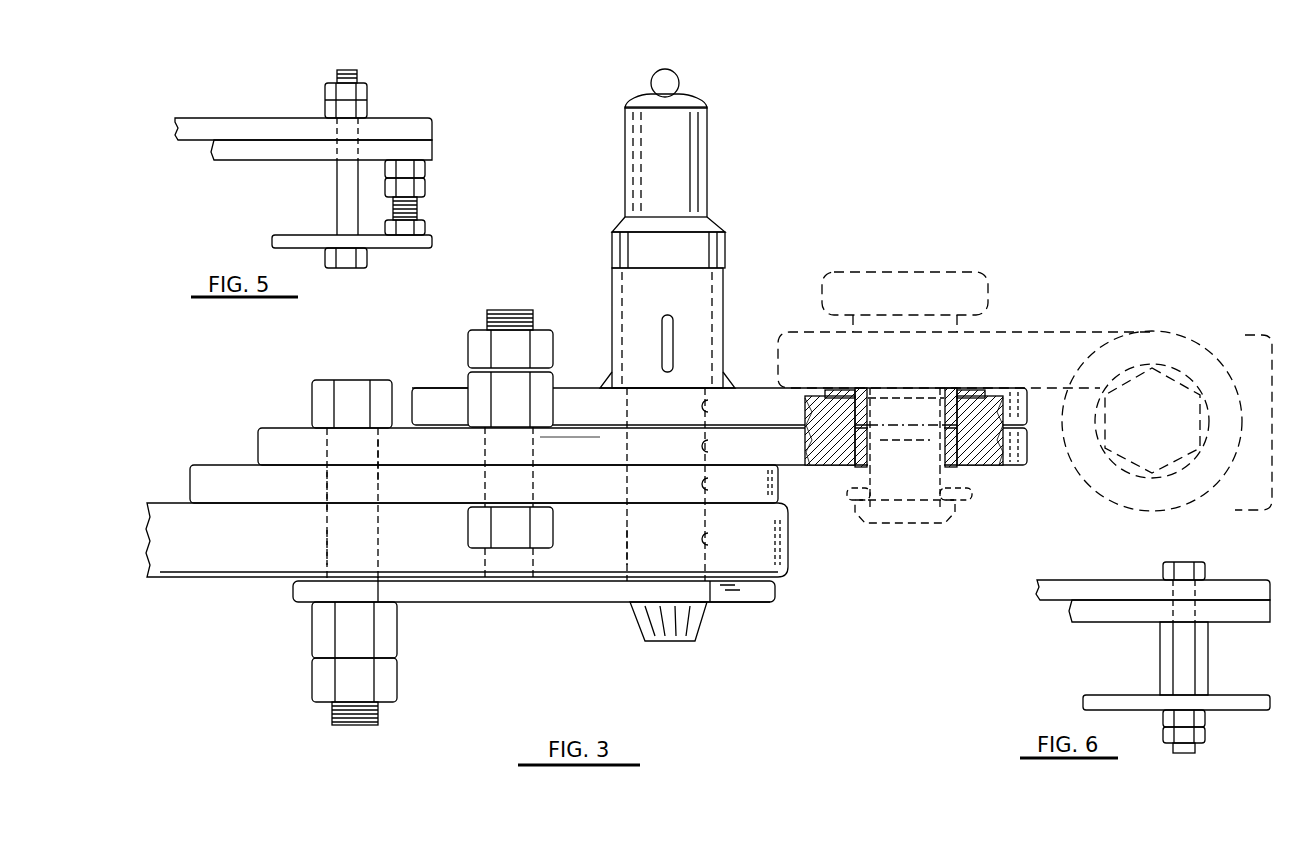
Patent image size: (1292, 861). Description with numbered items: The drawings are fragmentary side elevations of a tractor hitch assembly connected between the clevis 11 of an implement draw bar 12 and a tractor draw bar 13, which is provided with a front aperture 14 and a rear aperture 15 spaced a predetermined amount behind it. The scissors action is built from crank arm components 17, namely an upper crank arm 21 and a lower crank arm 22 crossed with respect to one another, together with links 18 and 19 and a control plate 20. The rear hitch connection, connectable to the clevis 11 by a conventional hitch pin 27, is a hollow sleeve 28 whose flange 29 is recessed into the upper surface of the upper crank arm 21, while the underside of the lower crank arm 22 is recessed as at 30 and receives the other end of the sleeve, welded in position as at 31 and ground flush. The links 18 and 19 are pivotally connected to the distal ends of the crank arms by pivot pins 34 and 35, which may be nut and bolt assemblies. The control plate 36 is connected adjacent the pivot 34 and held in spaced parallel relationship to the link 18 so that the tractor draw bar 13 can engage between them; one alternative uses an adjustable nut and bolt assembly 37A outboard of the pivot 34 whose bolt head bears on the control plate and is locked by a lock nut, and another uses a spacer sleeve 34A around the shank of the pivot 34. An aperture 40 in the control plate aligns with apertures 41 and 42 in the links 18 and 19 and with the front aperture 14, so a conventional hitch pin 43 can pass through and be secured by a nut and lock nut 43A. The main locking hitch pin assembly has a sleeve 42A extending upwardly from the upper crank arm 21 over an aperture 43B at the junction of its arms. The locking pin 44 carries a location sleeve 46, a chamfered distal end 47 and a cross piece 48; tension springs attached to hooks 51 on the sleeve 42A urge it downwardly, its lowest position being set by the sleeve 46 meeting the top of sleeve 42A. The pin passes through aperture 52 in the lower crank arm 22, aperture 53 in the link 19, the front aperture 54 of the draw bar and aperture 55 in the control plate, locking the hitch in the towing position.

In FIG. 3, the clevis 11 is at (1064, 344).
In FIG. 3, the implement draw bar 12 is at (1256, 340).
In FIG. 3, the tractor draw bar 13 is at (206, 563).
In FIG. 3, the front aperture 14 is at (326, 548).
In FIG. 3, the rear aperture 15 is at (625, 548).
In FIG. 3, the crank arm components 17 is at (436, 382).
In FIG. 5, the link 18 is at (236, 166).
In FIG. 6, the link 18 is at (1112, 625).
In FIG. 3, the link 18 is at (263, 424).
In FIG. 3, the link 19 is at (198, 462).
In FIG. 3, the control plate 20 is at (786, 604).
In FIG. 5, the upper crank arm 21 is at (226, 122).
In FIG. 6, the upper crank arm 21 is at (1110, 582).
In FIG. 3, the upper crank arm 21 is at (410, 418).
In FIG. 3, the lower crank arm 22 is at (567, 436).
In FIG. 3, the hitch pin 27 is at (912, 402).
In FIG. 3, the hollow sleeve 28 is at (846, 388).
In FIG. 3, the flange 29 is at (872, 400).
In FIG. 3, the recess 30 is at (966, 468).
In FIG. 3, the weld 31 is at (950, 470).
In FIG. 5, the pivot pin 34 is at (368, 92).
In FIG. 6, the pivot pin 34 is at (1206, 566).
In FIG. 6, the spacer sleeve 34A is at (1208, 675).
In FIG. 3, the pivot pin 35 is at (472, 322).
In FIG. 5, the control plate 36 is at (312, 234).
In FIG. 6, the control plate 36 is at (1112, 694).
In FIG. 3, the control plate 36 is at (543, 594).
In FIG. 5, the nut and bolt assembly 37A is at (428, 205).
In FIG. 3, the aperture 40 is at (380, 592).
In FIG. 3, the aperture 41 is at (380, 452).
In FIG. 3, the aperture 42 is at (326, 492).
In FIG. 3, the sleeve 42A is at (612, 297).
In FIG. 3, the hitch pin 43 is at (323, 380).
In FIG. 3, the nut and lock nut 43A is at (398, 670).
In FIG. 3, the aperture 43B is at (712, 410).
In FIG. 3, the locking pin 44 is at (714, 170).
In FIG. 3, the location sleeve 46 is at (612, 244).
In FIG. 3, the chamfered distal end 47 is at (700, 628).
In FIG. 3, the cross piece 48 is at (660, 82).
In FIG. 3, the hooks 51 is at (664, 340).
In FIG. 3, the aperture 52 is at (712, 450).
In FIG. 3, the aperture 53 is at (712, 488).
In FIG. 3, the front aperture 54 is at (712, 550).
In FIG. 3, the aperture 55 is at (718, 597).